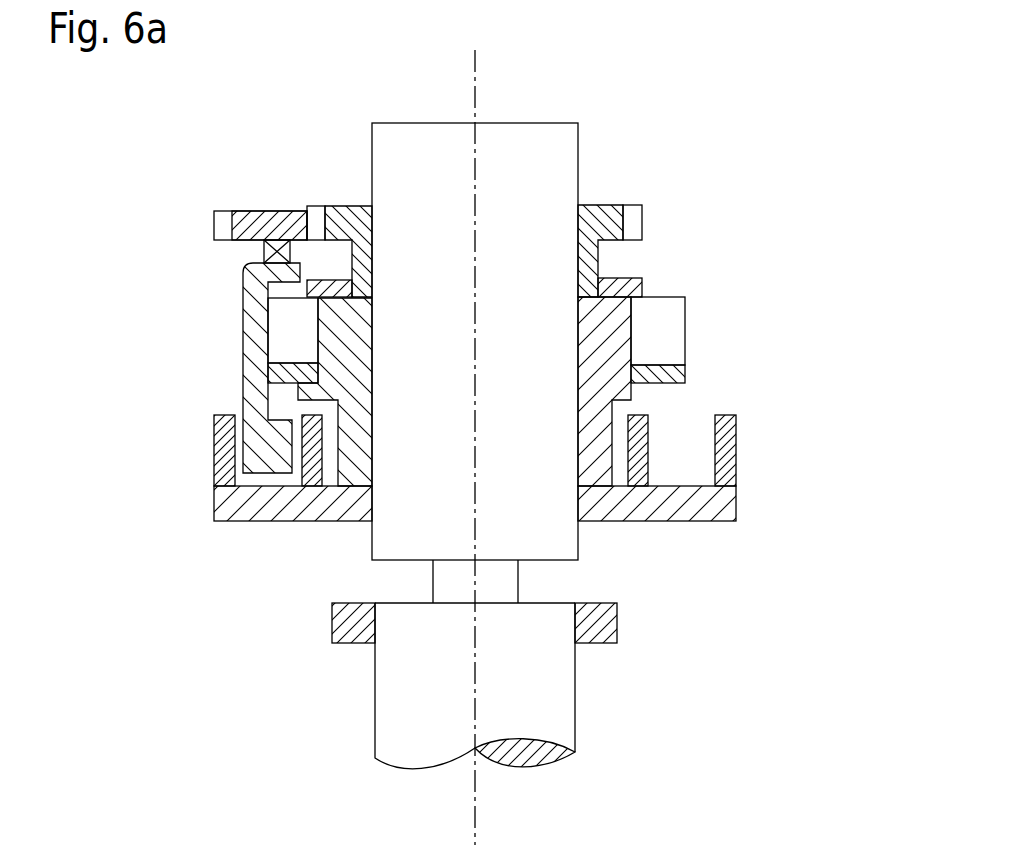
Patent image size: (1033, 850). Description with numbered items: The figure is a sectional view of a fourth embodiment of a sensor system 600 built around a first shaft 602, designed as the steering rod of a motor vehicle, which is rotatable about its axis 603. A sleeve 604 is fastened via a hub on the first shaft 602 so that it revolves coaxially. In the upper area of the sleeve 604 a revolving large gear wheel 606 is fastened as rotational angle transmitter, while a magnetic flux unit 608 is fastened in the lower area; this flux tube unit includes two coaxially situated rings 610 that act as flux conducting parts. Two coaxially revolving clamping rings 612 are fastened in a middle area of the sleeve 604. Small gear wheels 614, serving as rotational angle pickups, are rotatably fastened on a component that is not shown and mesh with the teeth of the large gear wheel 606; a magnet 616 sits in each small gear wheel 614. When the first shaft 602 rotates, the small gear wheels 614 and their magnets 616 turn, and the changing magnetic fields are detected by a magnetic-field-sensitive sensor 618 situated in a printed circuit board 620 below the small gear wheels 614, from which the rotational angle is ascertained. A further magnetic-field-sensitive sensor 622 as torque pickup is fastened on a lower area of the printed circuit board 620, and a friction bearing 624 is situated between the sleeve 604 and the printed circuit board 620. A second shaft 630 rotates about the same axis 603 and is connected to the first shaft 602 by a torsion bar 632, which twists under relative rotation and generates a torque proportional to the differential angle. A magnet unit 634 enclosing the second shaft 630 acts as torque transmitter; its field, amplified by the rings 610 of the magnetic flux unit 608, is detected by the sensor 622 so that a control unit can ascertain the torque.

The sensor system 600 is at (143, 350).
The first shaft 602 is at (558, 116).
The axis 603 is at (475, 87).
The sleeve 604 is at (616, 260).
The large gear wheel 606 is at (343, 203).
The magnetic flux unit 608 is at (250, 505).
The rings 610 is at (225, 460).
The clamping rings 612 is at (637, 289).
The small gear wheels 614 is at (207, 213).
The magnet 616 is at (278, 218).
The magnetic-field-sensitive sensor 618 is at (262, 256).
The printed circuit board 620 is at (233, 314).
The magnetic-field-sensitive sensor 622 is at (278, 457).
The friction bearing 624 is at (288, 340).
The second shaft 630 is at (567, 716).
The torsion bar 632 is at (528, 580).
The magnet unit 634 is at (627, 628).